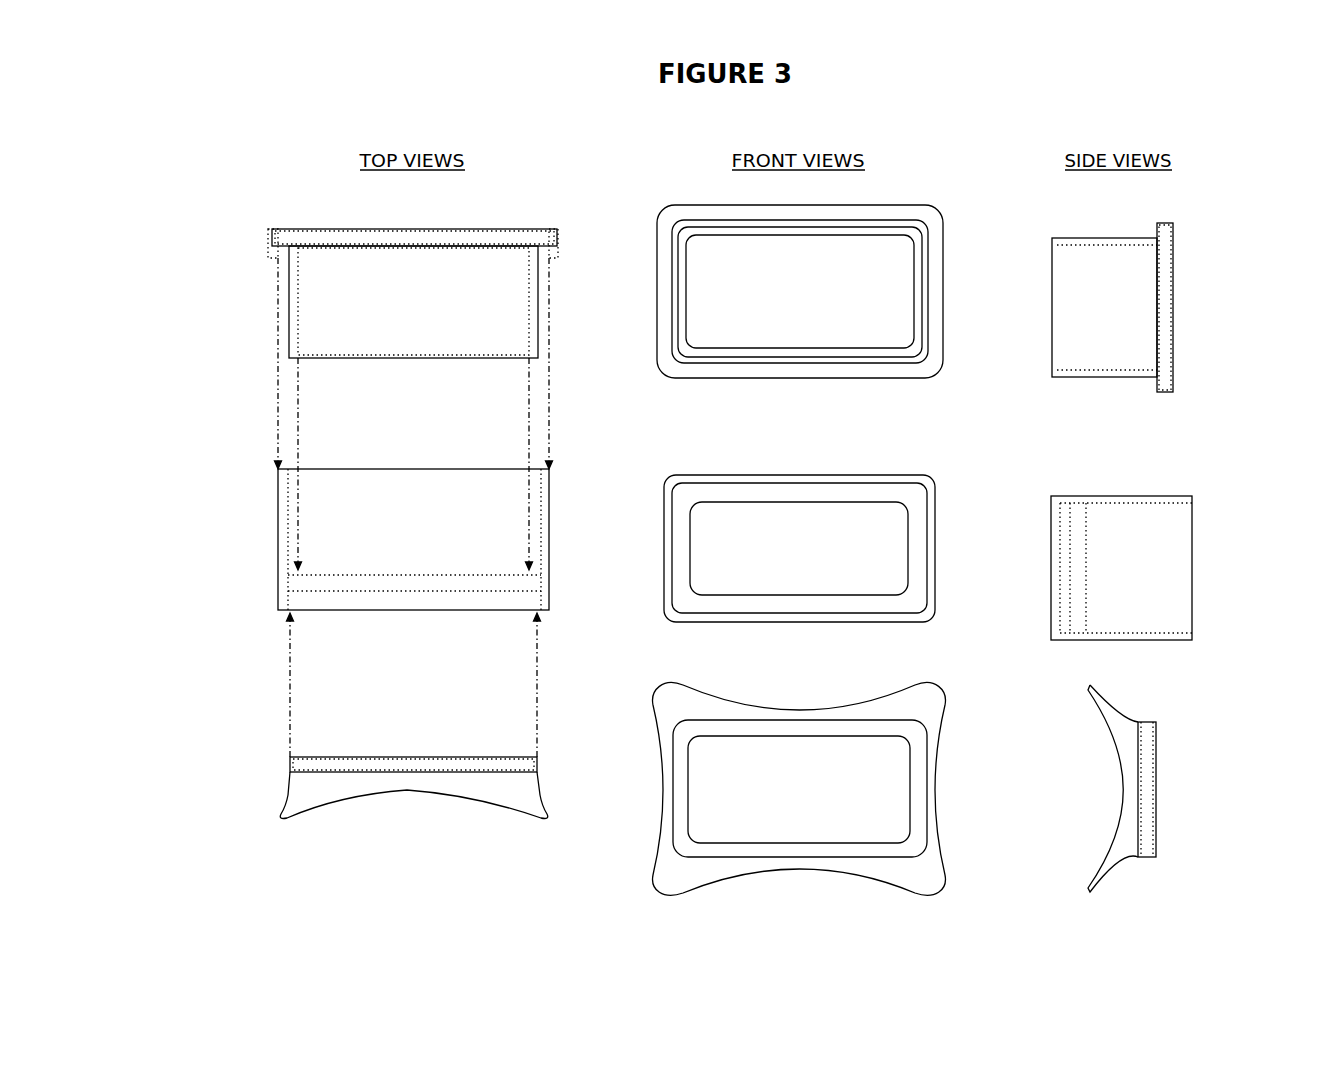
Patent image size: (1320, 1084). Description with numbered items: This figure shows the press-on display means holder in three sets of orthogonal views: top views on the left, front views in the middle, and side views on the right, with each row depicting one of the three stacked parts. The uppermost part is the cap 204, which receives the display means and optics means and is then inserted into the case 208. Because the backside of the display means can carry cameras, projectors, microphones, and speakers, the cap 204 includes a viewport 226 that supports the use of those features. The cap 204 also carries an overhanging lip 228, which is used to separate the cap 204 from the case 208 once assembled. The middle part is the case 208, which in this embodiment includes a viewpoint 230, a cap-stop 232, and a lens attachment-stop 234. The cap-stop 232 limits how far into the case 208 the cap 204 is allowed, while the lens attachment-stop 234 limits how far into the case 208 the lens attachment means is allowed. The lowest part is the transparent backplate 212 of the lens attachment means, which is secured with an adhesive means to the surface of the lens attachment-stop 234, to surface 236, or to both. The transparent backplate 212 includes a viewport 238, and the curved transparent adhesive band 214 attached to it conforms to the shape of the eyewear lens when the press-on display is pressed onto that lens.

The cap 204 is at (540, 300).
The case 208 is at (551, 508).
The transparent backplate 212 is at (400, 757).
The transparent adhesive band 214 is at (298, 815).
The viewport 226 is at (304, 240).
The overhanging lip 228 is at (277, 228).
The viewpoint 230 is at (370, 592).
The cap-stop 232 is at (527, 560).
The lens attachment-stop 234 is at (530, 592).
The surface 236 is at (290, 602).
The viewport 238 is at (307, 765).